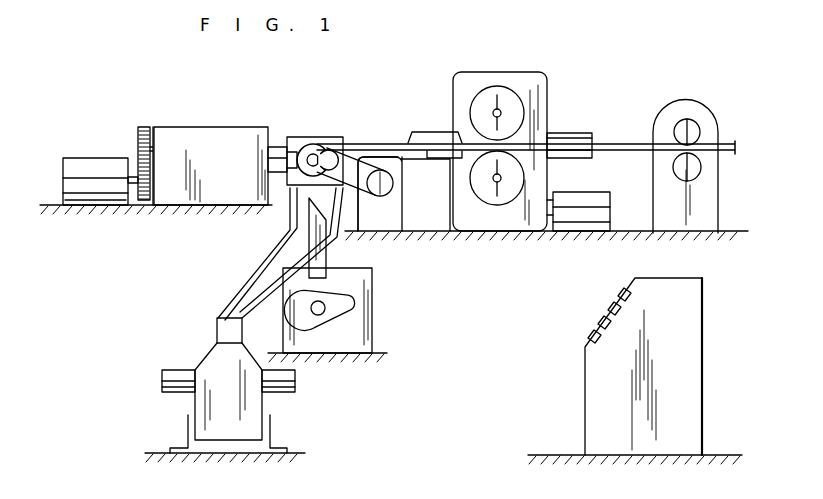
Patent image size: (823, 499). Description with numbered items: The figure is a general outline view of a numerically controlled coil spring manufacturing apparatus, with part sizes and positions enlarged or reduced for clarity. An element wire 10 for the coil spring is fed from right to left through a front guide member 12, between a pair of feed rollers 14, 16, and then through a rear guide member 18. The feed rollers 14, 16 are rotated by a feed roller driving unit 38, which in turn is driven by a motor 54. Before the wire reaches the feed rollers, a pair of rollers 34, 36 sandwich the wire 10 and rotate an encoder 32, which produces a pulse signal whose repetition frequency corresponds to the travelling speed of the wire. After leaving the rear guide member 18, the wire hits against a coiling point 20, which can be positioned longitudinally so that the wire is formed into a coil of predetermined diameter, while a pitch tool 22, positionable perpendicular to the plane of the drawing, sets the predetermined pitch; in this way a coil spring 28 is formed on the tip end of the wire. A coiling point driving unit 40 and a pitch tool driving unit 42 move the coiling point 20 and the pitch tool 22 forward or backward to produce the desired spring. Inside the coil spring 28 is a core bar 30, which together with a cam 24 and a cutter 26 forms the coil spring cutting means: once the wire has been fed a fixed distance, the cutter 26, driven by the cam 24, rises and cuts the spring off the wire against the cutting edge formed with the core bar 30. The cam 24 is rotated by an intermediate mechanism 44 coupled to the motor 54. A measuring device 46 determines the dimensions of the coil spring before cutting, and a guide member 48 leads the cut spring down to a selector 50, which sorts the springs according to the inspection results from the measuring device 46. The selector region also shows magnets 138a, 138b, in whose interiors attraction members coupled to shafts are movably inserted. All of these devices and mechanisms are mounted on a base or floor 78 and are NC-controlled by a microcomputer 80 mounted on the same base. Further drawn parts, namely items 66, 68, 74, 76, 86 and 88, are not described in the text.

The element wire 10 is at (734, 146).
The front guide member 12 is at (582, 142).
The feed roller 14 is at (512, 112).
The feed roller 16 is at (506, 157).
The rear guide member 18 is at (434, 132).
The coiling point 20 is at (276, 147).
The pitch tool 22 is at (360, 168).
The cam 24 is at (353, 300).
The cutter 26 is at (326, 256).
The coil spring 28 is at (308, 144).
The core bar 30 is at (314, 154).
The encoder 32 is at (688, 108).
The roller 34 is at (666, 140).
The roller 36 is at (700, 170).
The feed roller driving unit 38 is at (516, 80).
The coiling point driving unit 40 is at (137, 119).
The pitch tool driving unit 42 is at (410, 176).
The intermediate mechanism 44 is at (372, 340).
The measuring device 46 is at (328, 137).
The guide member 48 is at (253, 295).
The selector 50 is at (202, 359).
The motor 54 is at (583, 225).
The motor 66 is at (80, 178).
The gear housing 68 is at (196, 130).
The support 74 is at (398, 228).
The bracket 76 is at (392, 158).
The base or floor 78 is at (100, 216).
The microcomputer 80 is at (702, 313).
The gear 86 is at (138, 170).
The gear 88 is at (138, 140).
The magnet 138a is at (290, 395).
The magnet 138b is at (170, 395).